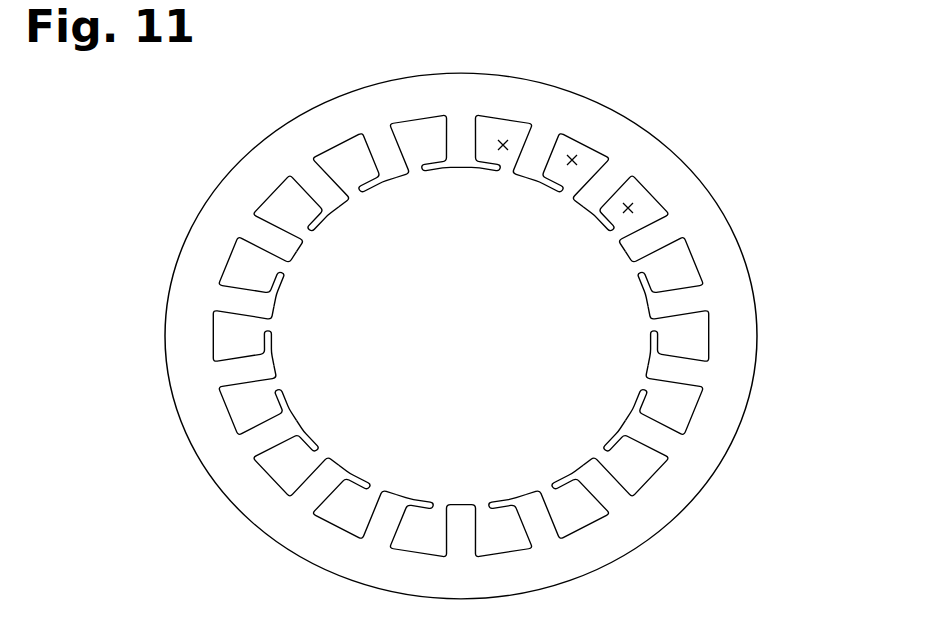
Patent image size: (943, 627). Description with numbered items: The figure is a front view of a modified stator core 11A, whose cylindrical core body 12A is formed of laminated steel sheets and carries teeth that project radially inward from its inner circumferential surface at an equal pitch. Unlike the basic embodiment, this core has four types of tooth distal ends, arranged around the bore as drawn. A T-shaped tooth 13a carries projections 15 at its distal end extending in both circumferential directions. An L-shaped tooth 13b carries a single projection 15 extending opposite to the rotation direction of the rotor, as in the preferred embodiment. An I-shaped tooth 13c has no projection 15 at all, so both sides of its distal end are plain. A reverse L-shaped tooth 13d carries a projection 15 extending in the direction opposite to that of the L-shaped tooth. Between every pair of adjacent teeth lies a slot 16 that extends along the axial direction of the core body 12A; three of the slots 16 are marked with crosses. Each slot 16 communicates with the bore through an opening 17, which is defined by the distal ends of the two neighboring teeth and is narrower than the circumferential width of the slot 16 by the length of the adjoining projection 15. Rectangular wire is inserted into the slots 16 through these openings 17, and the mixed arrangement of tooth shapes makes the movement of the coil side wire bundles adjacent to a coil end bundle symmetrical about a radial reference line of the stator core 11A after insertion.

The stator core 11A is at (762, 172).
The core body 12A is at (736, 248).
The T-shaped tooth 13a is at (300, 398).
The L-shaped tooth 13b is at (398, 500).
The I-shaped tooth 13c is at (462, 497).
The reverse L-shaped tooth 13d is at (590, 465).
The projection 15 is at (280, 275).
The slot 16 is at (626, 210).
The opening 17 is at (650, 322).